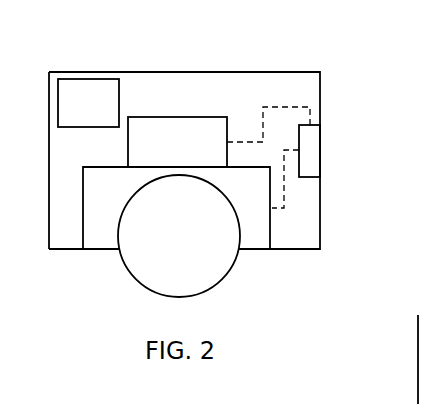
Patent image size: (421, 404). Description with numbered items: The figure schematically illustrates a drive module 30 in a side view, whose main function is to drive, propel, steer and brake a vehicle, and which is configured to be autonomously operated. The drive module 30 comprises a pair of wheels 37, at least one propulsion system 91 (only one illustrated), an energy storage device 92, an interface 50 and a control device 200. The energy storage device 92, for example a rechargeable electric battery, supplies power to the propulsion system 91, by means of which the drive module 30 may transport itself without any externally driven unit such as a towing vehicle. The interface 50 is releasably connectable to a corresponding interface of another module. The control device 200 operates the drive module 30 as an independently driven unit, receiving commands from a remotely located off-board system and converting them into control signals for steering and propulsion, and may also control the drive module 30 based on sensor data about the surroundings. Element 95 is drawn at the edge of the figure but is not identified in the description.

The drive module 30 is at (218, 72).
The control device 200 is at (108, 116).
The energy storage device 92 is at (162, 147).
The propulsion system 91 is at (115, 197).
The interface 50 is at (320, 145).
The wheel 37 is at (140, 283).
The wall 95 is at (418, 358).